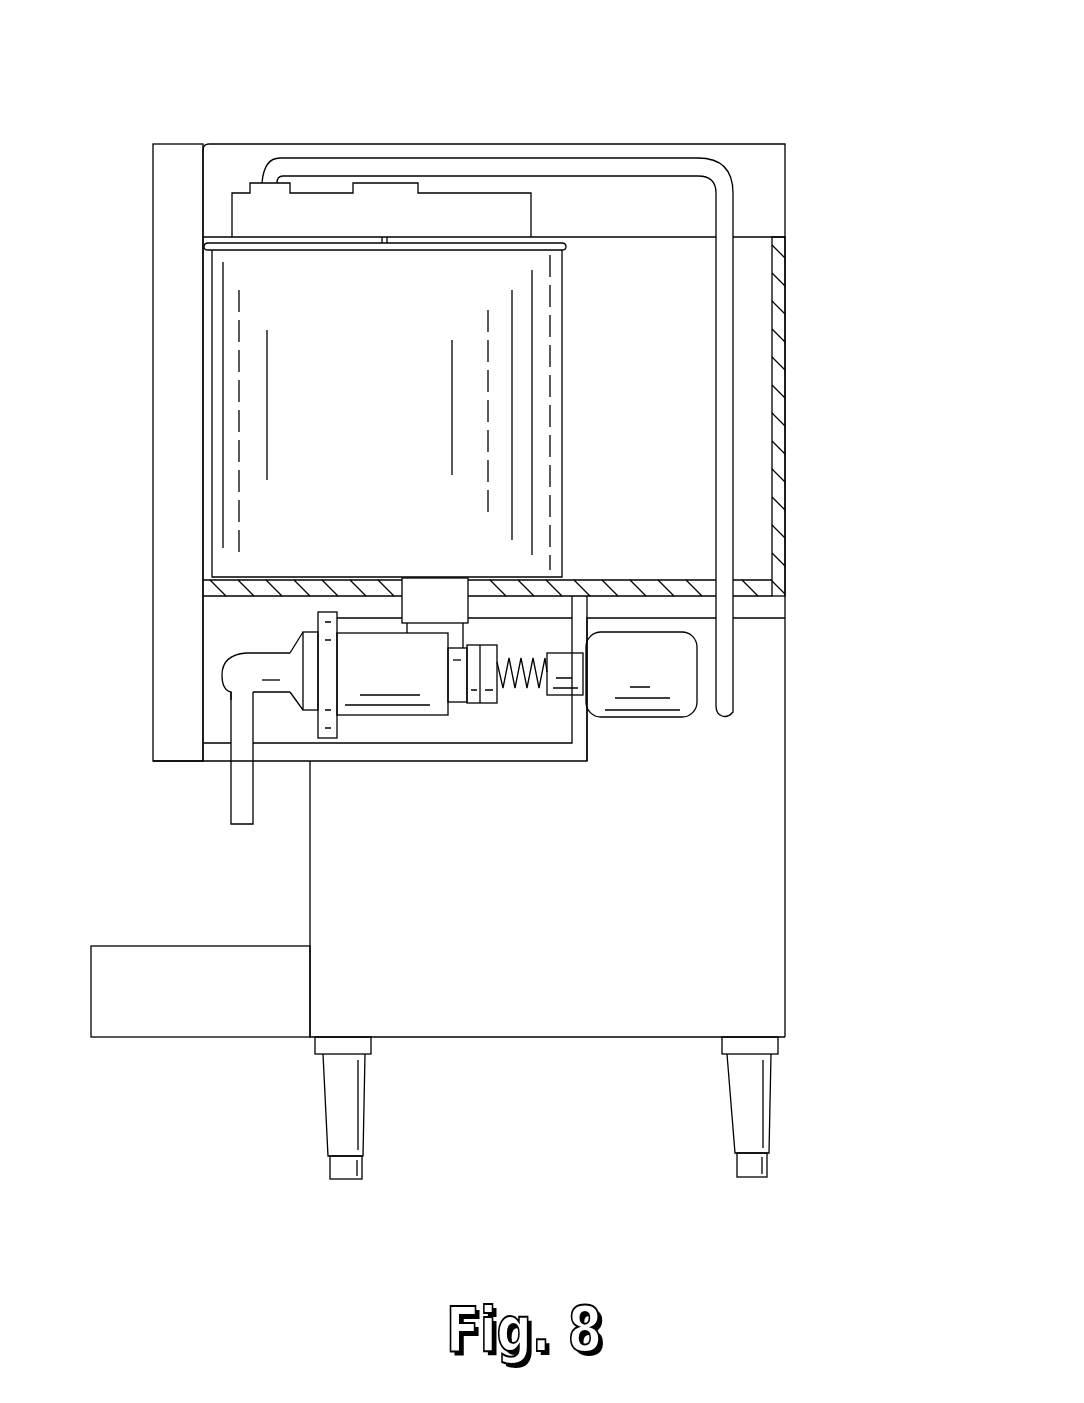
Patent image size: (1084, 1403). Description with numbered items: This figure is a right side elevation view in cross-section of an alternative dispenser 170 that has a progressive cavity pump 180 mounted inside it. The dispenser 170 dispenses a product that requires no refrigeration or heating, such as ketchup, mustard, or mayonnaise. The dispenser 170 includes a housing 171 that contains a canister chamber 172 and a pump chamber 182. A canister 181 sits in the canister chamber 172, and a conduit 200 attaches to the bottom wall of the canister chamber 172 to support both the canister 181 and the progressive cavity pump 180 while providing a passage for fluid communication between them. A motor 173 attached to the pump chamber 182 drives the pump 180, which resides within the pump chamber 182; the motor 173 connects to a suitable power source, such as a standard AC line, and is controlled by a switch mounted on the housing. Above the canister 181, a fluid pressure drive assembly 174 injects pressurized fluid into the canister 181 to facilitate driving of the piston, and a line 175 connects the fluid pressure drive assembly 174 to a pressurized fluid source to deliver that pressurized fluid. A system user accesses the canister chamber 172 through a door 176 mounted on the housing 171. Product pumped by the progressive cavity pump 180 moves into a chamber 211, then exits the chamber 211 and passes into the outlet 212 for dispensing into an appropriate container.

The dispenser 170 is at (847, 118).
The housing 171 is at (566, 895).
The canister chamber 172 is at (658, 418).
The motor 173 is at (635, 718).
The fluid pressure drive assembly 174 is at (505, 208).
The line 175 is at (427, 165).
The door 176 is at (178, 144).
The progressive cavity pump 180 is at (410, 683).
The canister 181 is at (383, 423).
The pump chamber 182 is at (544, 736).
The conduit 200 is at (432, 594).
The chamber 211 is at (252, 660).
The outlet 212 is at (256, 800).